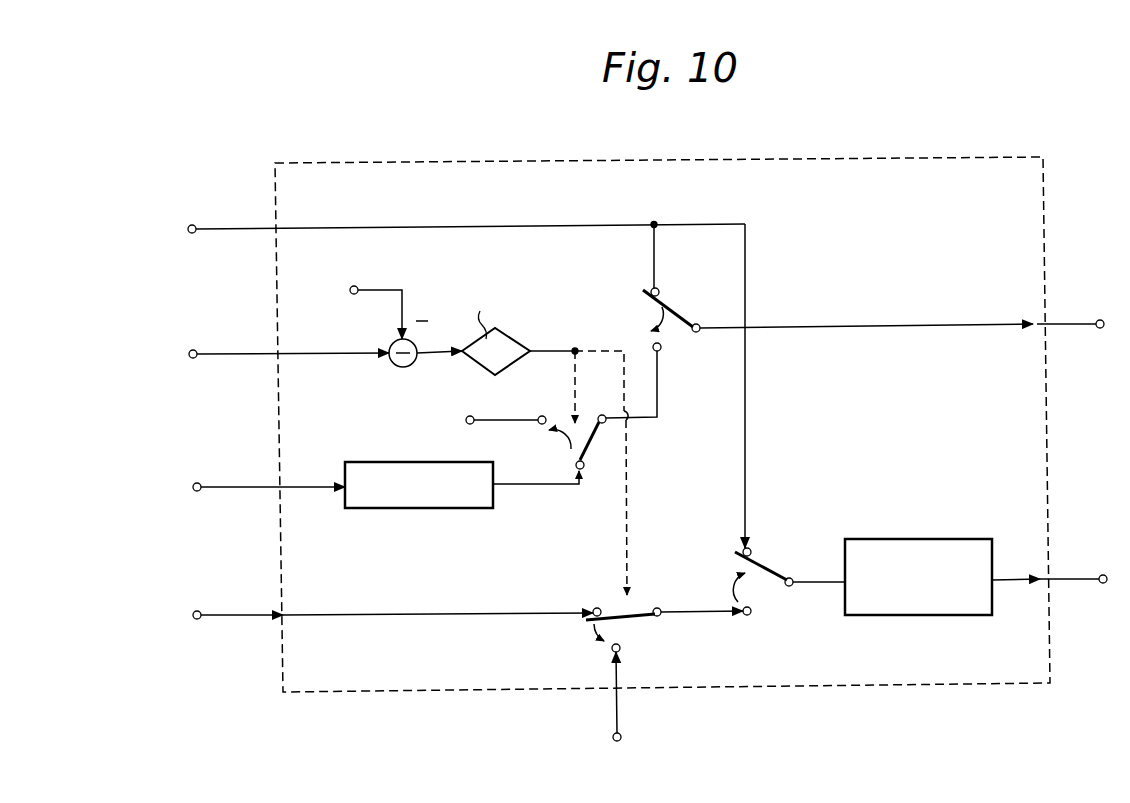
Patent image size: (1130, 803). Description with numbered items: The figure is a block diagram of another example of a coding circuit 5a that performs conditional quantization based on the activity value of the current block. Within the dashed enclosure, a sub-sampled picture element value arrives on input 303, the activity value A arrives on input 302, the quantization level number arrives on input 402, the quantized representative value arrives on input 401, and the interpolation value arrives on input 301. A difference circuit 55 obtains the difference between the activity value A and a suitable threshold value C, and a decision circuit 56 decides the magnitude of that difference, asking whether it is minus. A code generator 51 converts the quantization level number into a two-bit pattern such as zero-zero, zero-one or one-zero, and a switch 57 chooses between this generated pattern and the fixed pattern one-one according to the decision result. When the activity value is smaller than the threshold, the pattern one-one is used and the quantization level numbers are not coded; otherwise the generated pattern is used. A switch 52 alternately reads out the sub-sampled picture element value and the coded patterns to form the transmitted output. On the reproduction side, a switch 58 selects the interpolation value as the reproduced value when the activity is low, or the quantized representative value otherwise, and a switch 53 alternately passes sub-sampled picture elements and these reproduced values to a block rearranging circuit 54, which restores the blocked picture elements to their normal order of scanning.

The code converter 5a is at (871, 157).
The sub-sampled picture element input 303 is at (232, 226).
The activity value input 302 is at (232, 355).
The quantization level number input 402 is at (232, 487).
The quantized representative value input 401 is at (227, 613).
The interpolation value input 301 is at (613, 702).
The code generator 51 is at (395, 510).
The switch 52 is at (674, 307).
The switch 53 is at (764, 562).
The block rearranging circuit 54 is at (913, 537).
The difference circuit 55 is at (401, 368).
The decision circuit 56 is at (514, 339).
The switch 57 is at (589, 440).
The switch 58 is at (637, 621).